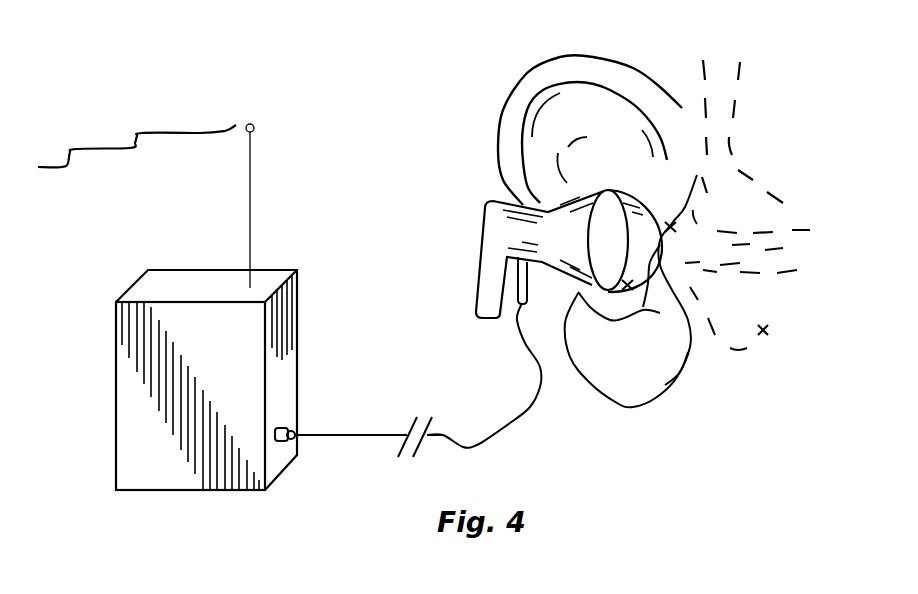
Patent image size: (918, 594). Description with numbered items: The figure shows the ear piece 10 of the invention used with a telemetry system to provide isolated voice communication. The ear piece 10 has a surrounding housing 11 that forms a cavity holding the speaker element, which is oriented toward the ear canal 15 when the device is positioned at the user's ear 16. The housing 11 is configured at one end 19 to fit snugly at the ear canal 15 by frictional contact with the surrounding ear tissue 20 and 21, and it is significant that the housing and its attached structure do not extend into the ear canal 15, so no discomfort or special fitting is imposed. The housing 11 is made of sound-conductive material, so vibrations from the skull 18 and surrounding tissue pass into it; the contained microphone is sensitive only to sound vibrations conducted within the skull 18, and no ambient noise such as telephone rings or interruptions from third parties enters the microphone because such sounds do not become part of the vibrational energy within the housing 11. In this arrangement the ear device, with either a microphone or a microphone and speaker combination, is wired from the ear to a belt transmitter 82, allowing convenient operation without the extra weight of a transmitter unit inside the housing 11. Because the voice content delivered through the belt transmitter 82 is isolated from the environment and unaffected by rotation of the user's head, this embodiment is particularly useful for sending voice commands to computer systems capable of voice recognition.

The ear piece 10 is at (468, 222).
The housing 11 is at (542, 262).
The ear canal 15 is at (700, 238).
The ear 16 is at (619, 80).
The skull 18 is at (720, 167).
The end of housing 19 is at (630, 267).
The surrounding ear tissue 20 is at (660, 313).
The surrounding ear tissue 21 is at (612, 190).
The belt transmitter 82 is at (137, 415).